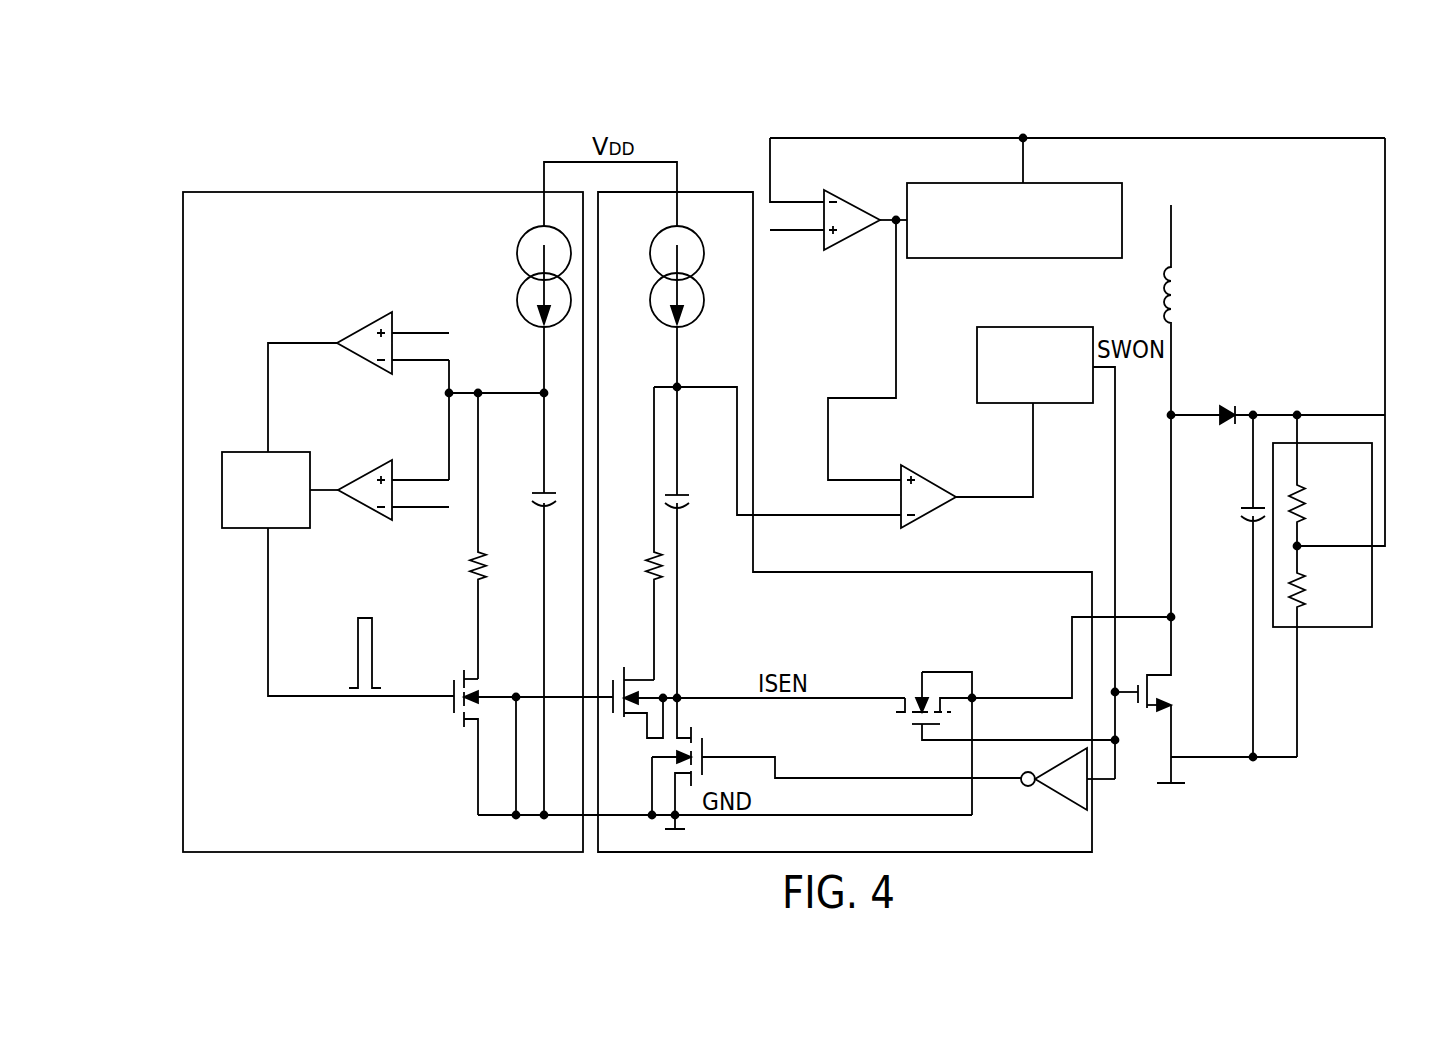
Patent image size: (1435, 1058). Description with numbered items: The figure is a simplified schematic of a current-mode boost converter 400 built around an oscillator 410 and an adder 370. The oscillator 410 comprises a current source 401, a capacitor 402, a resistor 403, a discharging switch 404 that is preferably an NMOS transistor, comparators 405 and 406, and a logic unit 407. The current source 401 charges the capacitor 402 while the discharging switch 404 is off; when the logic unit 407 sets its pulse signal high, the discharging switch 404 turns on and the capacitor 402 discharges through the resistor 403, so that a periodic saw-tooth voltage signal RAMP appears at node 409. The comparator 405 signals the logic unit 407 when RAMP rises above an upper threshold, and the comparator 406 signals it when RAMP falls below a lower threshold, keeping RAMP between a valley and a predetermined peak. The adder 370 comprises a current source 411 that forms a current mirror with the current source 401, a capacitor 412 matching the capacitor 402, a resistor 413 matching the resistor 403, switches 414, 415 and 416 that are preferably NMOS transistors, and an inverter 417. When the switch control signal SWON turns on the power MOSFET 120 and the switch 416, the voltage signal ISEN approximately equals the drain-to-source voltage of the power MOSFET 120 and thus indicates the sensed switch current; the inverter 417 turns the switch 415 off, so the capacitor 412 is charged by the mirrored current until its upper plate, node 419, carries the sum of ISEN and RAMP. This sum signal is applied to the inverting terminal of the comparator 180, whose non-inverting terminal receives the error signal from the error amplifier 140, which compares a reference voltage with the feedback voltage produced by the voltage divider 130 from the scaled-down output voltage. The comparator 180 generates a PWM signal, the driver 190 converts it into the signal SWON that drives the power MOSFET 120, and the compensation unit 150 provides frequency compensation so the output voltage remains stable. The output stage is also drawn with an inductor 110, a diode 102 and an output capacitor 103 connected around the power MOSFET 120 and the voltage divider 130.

The current-mode boost converter 400 is at (304, 110).
The oscillator 410 is at (460, 193).
The adder 370 is at (707, 192).
The current source 401 is at (533, 230).
The current source 411 is at (688, 318).
The comparator 405 is at (369, 322).
The comparator 406 is at (387, 468).
The logic unit 407 is at (275, 452).
The node 409 is at (540, 400).
The capacitor 402 is at (540, 493).
The resistor 403 is at (472, 580).
The discharging switch 404 is at (453, 718).
The capacitor 412 is at (684, 494).
The resistor 413 is at (650, 580).
The switch 414 is at (620, 727).
The switch 415 is at (715, 728).
The switch 416 is at (910, 723).
The inverter 417 is at (1082, 803).
The node 419 is at (682, 392).
The error amplifier 140 is at (830, 203).
The compensation unit 150 is at (1068, 183).
The comparator 180 is at (912, 480).
The driver 190 is at (1040, 403).
The inductor 110 is at (1176, 300).
The power MOSFET 120 is at (1172, 672).
The diode 102 is at (1222, 422).
The output capacitor 103 is at (1249, 508).
The voltage divider 130 is at (1330, 628).